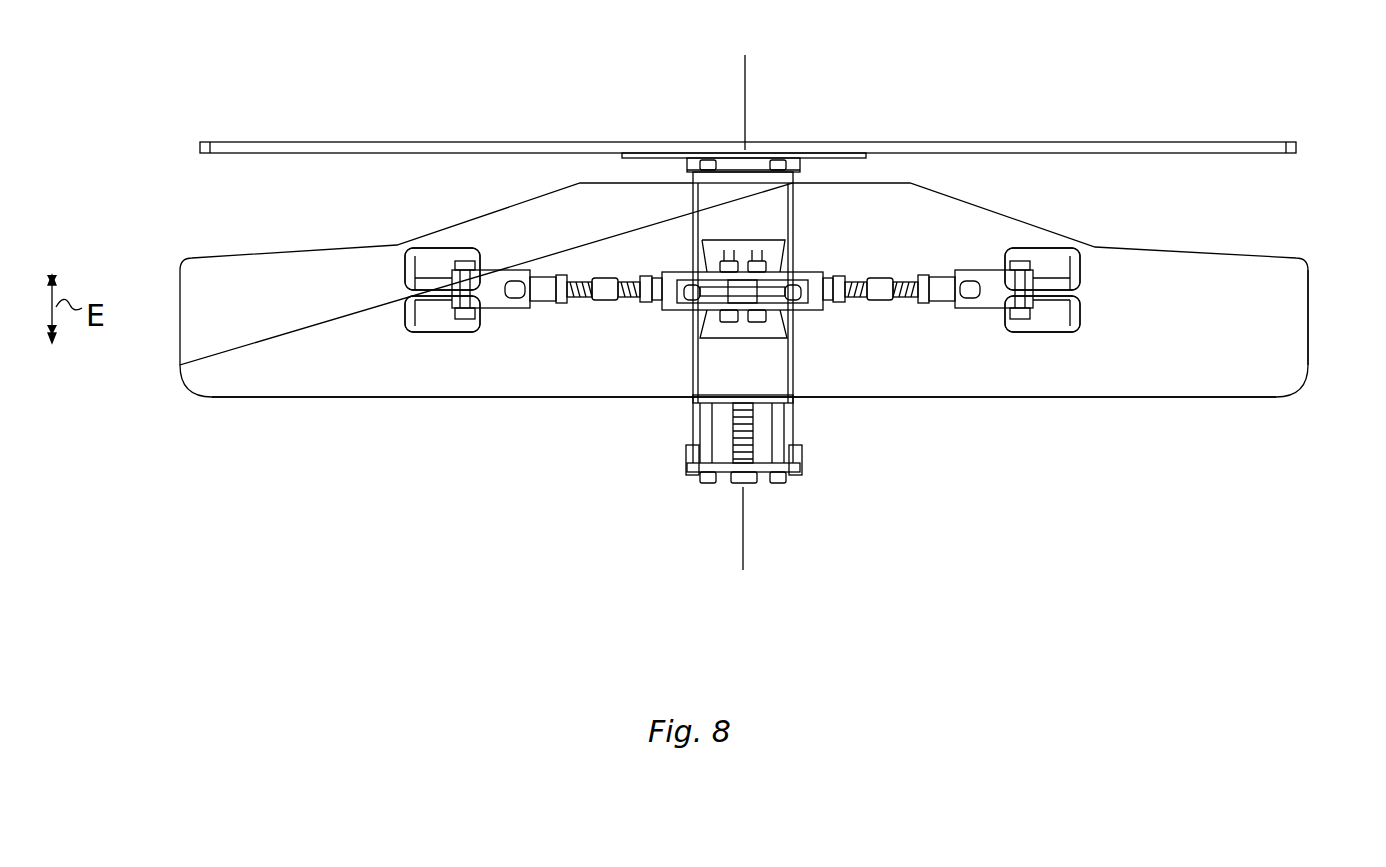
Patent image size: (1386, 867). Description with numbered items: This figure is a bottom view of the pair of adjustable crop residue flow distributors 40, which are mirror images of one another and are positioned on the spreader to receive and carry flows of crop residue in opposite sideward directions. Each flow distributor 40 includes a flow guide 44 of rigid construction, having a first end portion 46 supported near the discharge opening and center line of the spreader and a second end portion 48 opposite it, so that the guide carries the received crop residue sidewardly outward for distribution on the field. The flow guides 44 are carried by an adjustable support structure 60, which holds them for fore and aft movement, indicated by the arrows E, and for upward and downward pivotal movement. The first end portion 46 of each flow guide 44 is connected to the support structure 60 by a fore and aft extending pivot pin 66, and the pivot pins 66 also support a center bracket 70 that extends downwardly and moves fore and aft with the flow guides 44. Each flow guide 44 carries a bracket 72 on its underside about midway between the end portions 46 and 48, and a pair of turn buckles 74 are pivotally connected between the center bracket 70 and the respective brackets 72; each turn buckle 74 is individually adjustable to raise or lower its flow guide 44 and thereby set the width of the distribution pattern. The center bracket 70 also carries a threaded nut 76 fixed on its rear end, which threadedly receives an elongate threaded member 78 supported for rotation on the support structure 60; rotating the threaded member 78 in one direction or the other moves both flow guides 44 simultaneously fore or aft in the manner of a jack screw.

The crop residue flow distributor 40 is at (207, 400).
The flow guide 44 is at (430, 397).
The first end portion 46 is at (655, 183).
The second end portion 48 is at (180, 325).
The adjustable support structure 60 is at (796, 370).
The pivot pin 66 is at (710, 486).
The center bracket 70 is at (775, 242).
The bracket 72 is at (410, 333).
The turn buckle 74 is at (602, 303).
The threaded nut 76 is at (760, 413).
The threaded member 78 is at (755, 490).